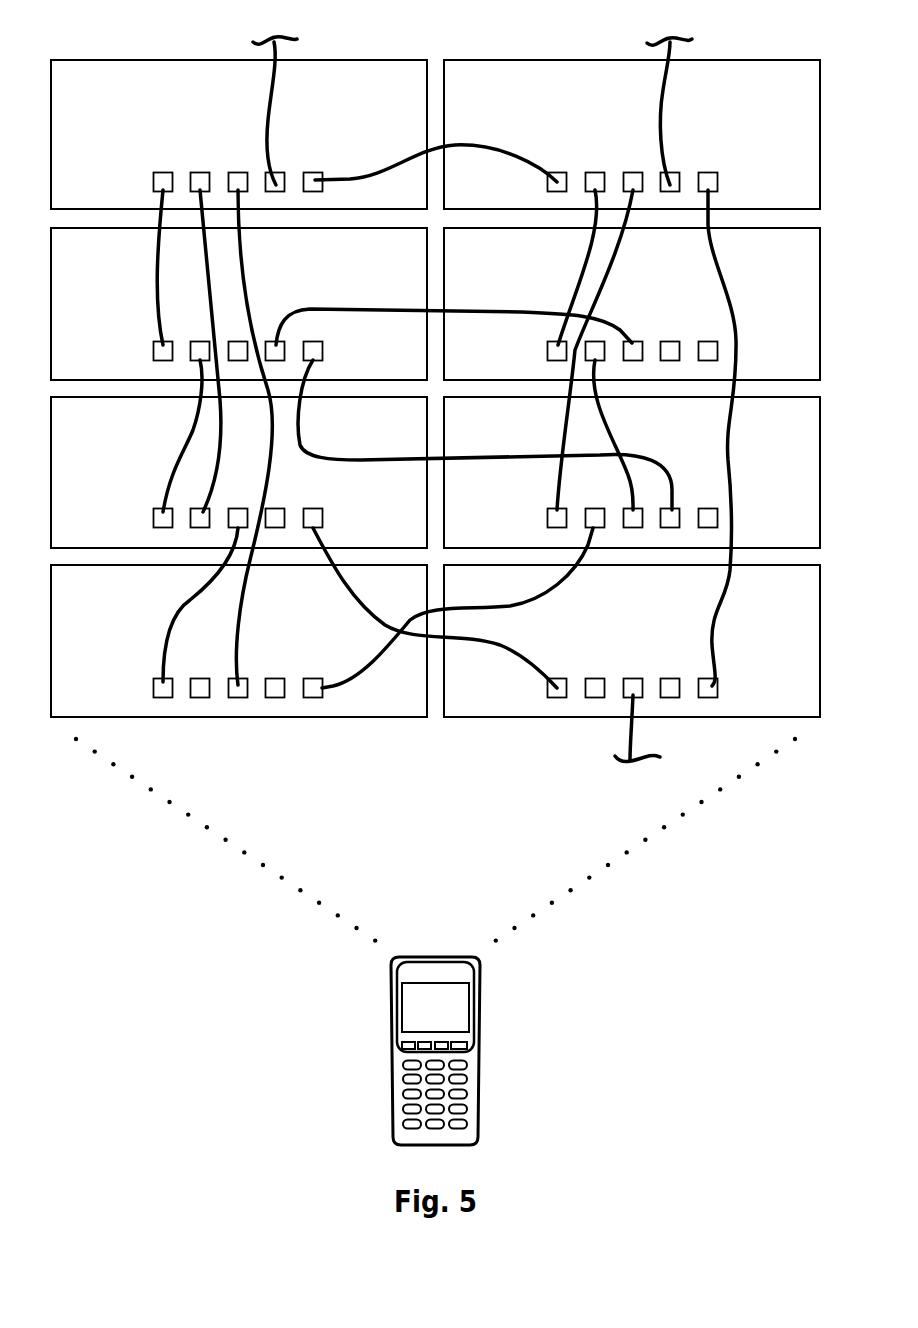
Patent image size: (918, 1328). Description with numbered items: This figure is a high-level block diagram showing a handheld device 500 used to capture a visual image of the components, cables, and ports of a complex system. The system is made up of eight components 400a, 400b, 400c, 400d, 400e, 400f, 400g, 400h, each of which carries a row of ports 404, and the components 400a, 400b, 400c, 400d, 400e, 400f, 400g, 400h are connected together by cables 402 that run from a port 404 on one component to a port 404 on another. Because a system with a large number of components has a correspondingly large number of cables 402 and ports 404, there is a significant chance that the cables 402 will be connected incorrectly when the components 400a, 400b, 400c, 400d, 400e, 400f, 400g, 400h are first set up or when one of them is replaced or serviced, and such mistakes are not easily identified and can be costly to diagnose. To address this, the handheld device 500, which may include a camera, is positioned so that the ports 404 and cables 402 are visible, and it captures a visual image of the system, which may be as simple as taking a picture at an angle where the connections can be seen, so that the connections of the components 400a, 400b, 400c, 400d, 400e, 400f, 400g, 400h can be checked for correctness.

The component 400a is at (118, 192).
The component 400b is at (804, 192).
The component 400c is at (118, 361).
The component 400d is at (804, 361).
The component 400e is at (118, 528).
The component 400f is at (804, 528).
The component 400g is at (118, 698).
The component 400h is at (804, 698).
The cable 402 is at (355, 178).
The port 404 is at (213, 149).
The handheld device 500 is at (481, 1046).